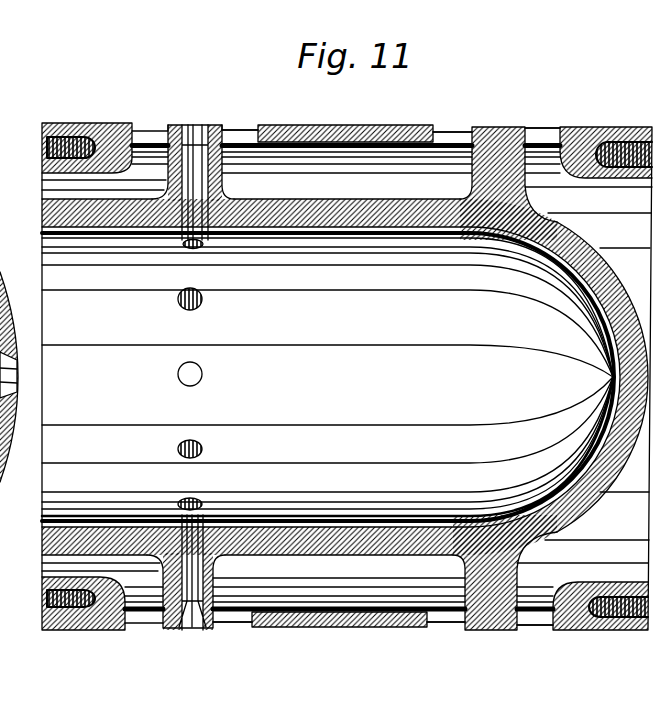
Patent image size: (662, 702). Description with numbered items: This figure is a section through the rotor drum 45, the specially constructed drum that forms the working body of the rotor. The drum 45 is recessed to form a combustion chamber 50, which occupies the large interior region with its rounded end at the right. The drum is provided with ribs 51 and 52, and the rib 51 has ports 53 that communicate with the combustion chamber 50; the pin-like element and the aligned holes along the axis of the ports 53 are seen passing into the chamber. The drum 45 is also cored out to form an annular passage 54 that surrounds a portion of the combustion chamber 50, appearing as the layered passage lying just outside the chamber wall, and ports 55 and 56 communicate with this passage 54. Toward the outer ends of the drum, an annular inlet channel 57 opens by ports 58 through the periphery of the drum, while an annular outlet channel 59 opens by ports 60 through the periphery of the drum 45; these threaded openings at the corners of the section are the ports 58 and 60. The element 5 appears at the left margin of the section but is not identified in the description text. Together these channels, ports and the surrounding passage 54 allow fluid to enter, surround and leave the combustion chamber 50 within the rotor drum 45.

The wheel 5 is at (42, 619).
The rotor drum 45 is at (323, 128).
The combustion chamber 50 is at (328, 377).
The rib 51 is at (216, 125).
The rib 52 is at (493, 127).
The ports 53 is at (193, 130).
The annular passage 54 is at (360, 163).
The port 55 is at (238, 130).
The port 56 is at (452, 131).
The annular inlet channel 57 is at (53, 190).
The ports 58 is at (146, 131).
The annular outlet channel 59 is at (602, 378).
The ports 60 is at (540, 130).